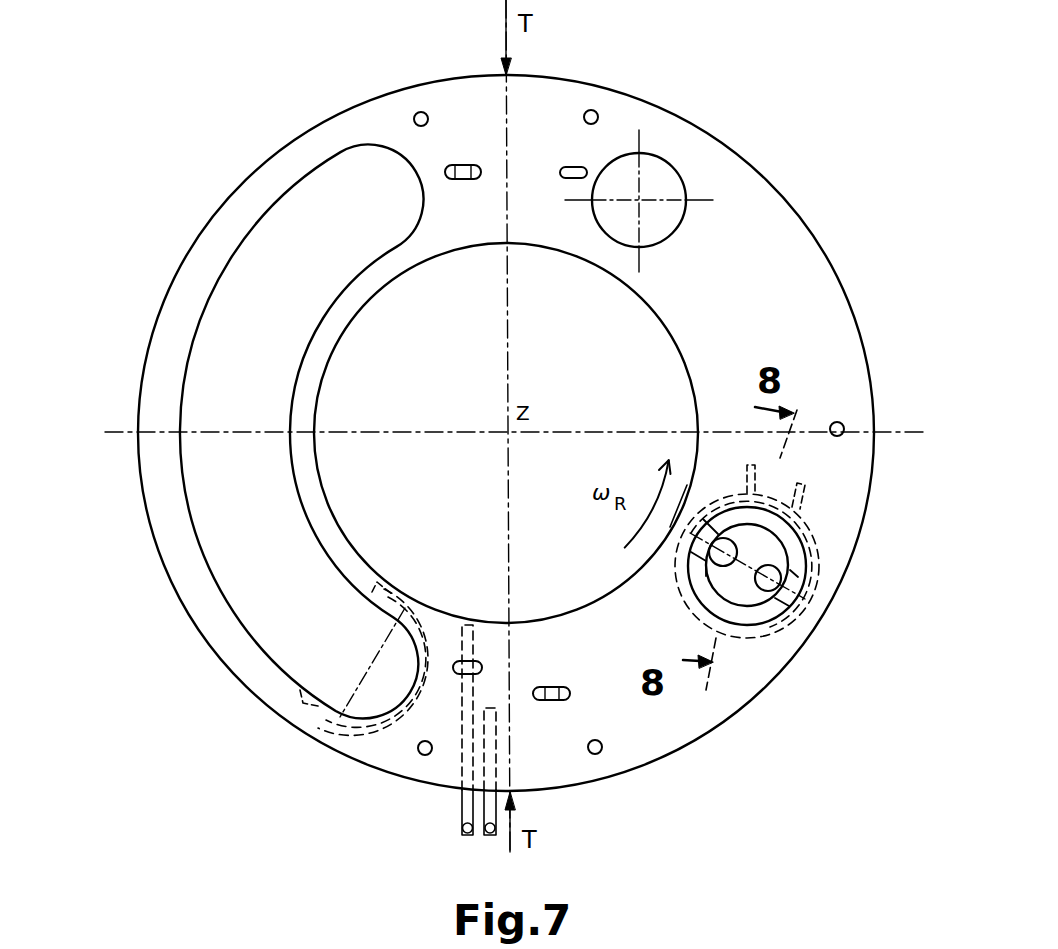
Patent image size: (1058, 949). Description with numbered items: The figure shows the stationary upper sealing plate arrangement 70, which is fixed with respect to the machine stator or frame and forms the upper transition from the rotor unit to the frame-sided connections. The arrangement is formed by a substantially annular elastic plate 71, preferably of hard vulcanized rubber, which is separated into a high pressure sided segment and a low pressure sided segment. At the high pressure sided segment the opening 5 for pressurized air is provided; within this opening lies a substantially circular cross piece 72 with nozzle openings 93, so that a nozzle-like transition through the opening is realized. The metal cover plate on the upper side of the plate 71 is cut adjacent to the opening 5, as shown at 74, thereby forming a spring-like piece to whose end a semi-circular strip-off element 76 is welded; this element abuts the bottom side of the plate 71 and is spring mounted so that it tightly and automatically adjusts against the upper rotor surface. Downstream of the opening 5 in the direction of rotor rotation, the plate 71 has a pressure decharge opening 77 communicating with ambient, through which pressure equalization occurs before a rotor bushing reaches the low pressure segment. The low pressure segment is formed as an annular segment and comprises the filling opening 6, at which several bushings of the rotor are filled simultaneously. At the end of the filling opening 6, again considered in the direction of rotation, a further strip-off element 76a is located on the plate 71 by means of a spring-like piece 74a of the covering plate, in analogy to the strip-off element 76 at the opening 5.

The upper sealing plate arrangement 70 is at (705, 85).
The annular elastic plate 71 is at (737, 182).
The pressure decharge opening 77 is at (667, 182).
The filling opening 6 is at (207, 347).
The cut in cover plate 74 is at (753, 470).
The circular cross piece 72 is at (777, 553).
The strip-off element 76 is at (810, 581).
The nozzle openings 93 is at (722, 557).
The opening for pressurized air 5 is at (753, 617).
The spring-like piece 74a is at (310, 700).
The strip-off element 76a is at (377, 717).